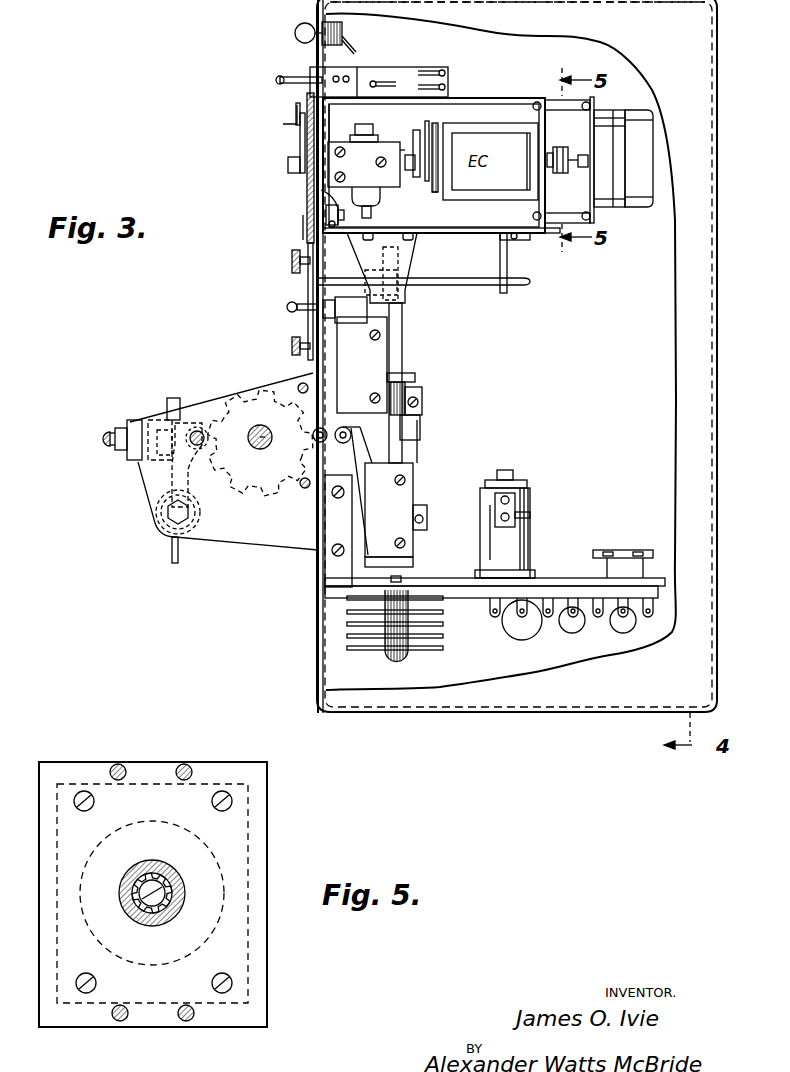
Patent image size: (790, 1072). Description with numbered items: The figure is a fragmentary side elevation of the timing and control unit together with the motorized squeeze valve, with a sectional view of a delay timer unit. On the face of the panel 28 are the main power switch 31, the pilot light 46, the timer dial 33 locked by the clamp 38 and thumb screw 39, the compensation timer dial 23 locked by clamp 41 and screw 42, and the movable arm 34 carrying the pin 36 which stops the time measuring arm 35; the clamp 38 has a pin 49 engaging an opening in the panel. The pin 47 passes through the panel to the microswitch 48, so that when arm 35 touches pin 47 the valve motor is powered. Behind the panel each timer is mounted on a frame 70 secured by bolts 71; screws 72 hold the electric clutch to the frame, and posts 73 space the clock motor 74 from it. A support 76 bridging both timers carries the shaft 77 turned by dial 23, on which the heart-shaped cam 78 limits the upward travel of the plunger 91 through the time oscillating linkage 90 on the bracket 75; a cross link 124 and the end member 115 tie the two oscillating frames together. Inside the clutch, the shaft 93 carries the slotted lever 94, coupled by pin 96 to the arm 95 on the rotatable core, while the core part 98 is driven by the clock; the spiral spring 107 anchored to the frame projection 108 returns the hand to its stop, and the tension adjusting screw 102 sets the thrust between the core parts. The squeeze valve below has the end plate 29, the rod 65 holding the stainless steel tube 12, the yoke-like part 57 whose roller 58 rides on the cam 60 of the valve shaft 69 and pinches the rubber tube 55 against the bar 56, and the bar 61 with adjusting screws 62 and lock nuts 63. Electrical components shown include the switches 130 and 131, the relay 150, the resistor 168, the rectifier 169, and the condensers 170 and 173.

In FIG. 3, the stainless steel tube 12 is at (175, 563).
In FIG. 3, the shift switch compensation timer dial 23 is at (308, 282).
In FIG. 3, the panel 28 is at (317, 636).
In FIG. 3, the end plate 29 is at (228, 540).
In FIG. 3, the main power switch 31 is at (290, 308).
In FIG. 3, the dial 33 is at (306, 208).
In FIG. 3, the movable arm 34 is at (300, 140).
In FIG. 3, the time measuring arm 35 is at (296, 108).
In FIG. 3, the pin 36 is at (290, 122).
In FIG. 3, the clamp 38 is at (303, 232).
In FIG. 3, the thumb screw 39 is at (292, 256).
In FIG. 3, the clamp 41 is at (312, 362).
In FIG. 3, the screw 42 is at (292, 346).
In FIG. 3, the pilot light 46 is at (296, 32).
In FIG. 3, the pin 47 is at (290, 78).
In FIG. 3, the microswitch 48 is at (405, 67).
In FIG. 3, the pin 49 is at (333, 323).
In FIG. 3, the rubber tube 55 is at (174, 398).
In FIG. 3, the bar 56 is at (155, 420).
In FIG. 3, the yoke-like part 57 is at (198, 430).
In FIG. 3, the roller 58 is at (252, 430).
In FIG. 3, the cam 60 is at (262, 490).
In FIG. 3, the bar 61 is at (132, 420).
In FIG. 3, the screw 62 is at (108, 434).
In FIG. 3, the nut 63 is at (120, 452).
In FIG. 3, the rod 65 is at (198, 520).
In FIG. 3, the valve shaft 69 is at (258, 428).
In FIG. 3, the frame 70 is at (480, 98).
In FIG. 3, the bolt 71 is at (334, 113).
In FIG. 3, the screw 72 is at (558, 156).
In FIG. 5, the screw 72 is at (80, 810).
In FIG. 3, the post 73 is at (548, 110).
In FIG. 5, the post 73 is at (182, 764).
In FIG. 3, the clock motor 74 is at (608, 112).
In FIG. 3, the bracket 75 is at (385, 240).
In FIG. 3, the support 76 is at (500, 262).
In FIG. 3, the shaft 77 is at (456, 286).
In FIG. 3, the heart-shaped cam 78 is at (412, 255).
In FIG. 3, the time oscillating linkage 90 is at (403, 352).
In FIG. 3, the plunger 91 is at (415, 390).
In FIG. 3, the shaft 93 is at (288, 164).
In FIG. 3, the slotted lever 94 is at (412, 172).
In FIG. 3, the arm 95 is at (427, 121).
In FIG. 3, the pin 96 is at (414, 135).
In FIG. 3, the solenoid core part 98 is at (585, 166).
In FIG. 5, the solenoid core part 98 is at (124, 885).
In FIG. 5, the tension adjusting screw 102 is at (150, 880).
In FIG. 3, the spiral spring 107 is at (434, 192).
In FIG. 3, the frame projection 108 is at (435, 123).
In FIG. 3, the end member 115 is at (402, 190).
In FIG. 3, the cross link 124 is at (325, 192).
In FIG. 3, the switch 130 is at (362, 365).
In FIG. 3, the switch 131 is at (370, 503).
In FIG. 3, the relay 150 is at (532, 536).
In FIG. 3, the resistor 168 is at (566, 626).
In FIG. 3, the rectifier 169 is at (358, 650).
In FIG. 3, the condenser 170 is at (512, 626).
In FIG. 3, the condenser 173 is at (612, 622).